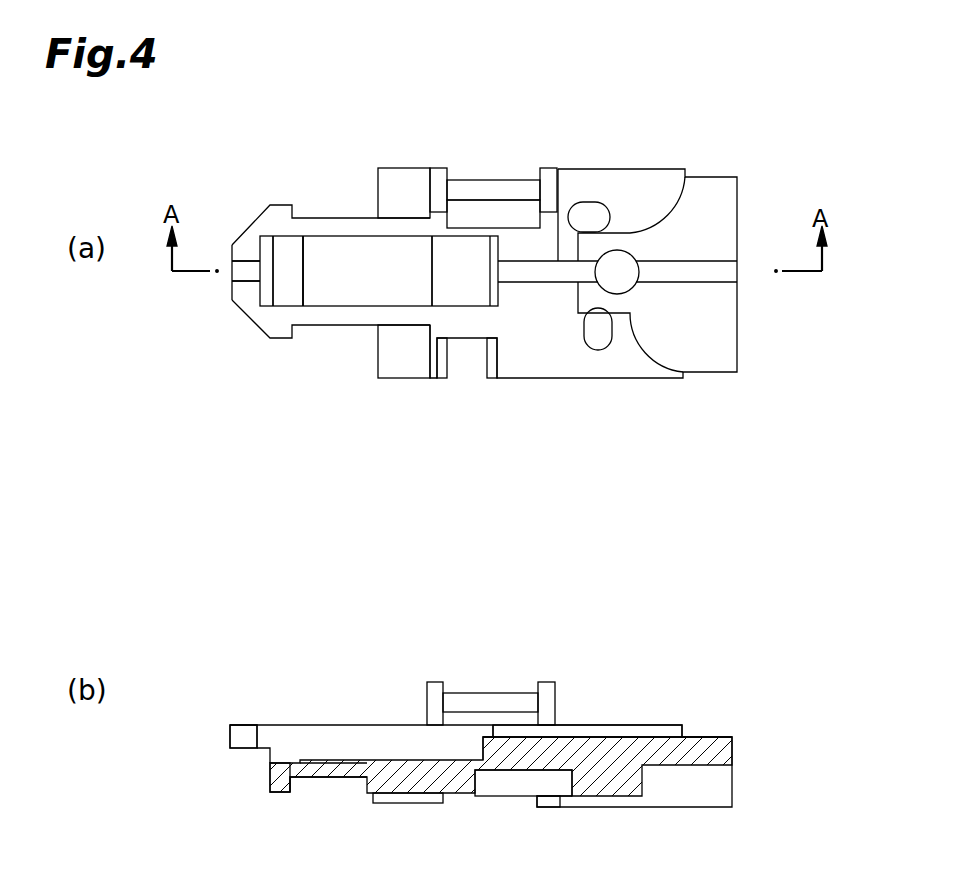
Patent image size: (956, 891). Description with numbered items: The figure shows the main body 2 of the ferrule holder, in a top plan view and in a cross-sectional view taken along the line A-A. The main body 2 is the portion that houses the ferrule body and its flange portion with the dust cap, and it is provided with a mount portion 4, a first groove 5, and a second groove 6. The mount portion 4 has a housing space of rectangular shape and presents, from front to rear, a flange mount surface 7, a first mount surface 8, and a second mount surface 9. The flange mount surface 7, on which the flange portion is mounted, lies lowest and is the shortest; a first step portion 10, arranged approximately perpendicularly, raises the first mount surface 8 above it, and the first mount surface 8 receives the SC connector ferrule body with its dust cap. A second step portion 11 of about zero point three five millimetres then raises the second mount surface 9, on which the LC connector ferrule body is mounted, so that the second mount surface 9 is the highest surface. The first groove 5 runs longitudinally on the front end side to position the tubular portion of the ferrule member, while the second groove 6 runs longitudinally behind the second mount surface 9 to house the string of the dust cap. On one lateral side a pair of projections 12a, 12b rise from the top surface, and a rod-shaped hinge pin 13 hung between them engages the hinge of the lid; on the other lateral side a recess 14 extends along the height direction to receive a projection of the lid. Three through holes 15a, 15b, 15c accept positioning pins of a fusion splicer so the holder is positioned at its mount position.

The main body 2 is at (687, 167).
The mount portion 4 is at (343, 250).
The first groove 5 is at (237, 278).
The second groove 6 is at (722, 270).
The flange mount surface 7 is at (287, 288).
The first mount surface 8 is at (335, 288).
The second mount surface 9 is at (465, 274).
The first step portion 10 is at (288, 794).
The second step portion 11 is at (420, 765).
The projection 12a is at (438, 184).
The projection 12b is at (550, 181).
The hinge pin 13 is at (495, 190).
The recess 14 is at (490, 358).
The through hole 15a is at (588, 215).
The through hole 15b is at (628, 272).
The through hole 15c is at (594, 338).